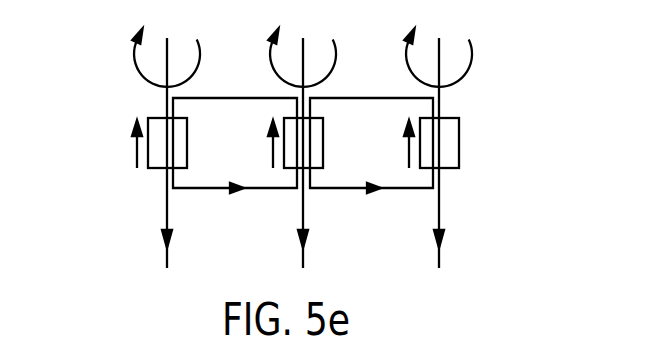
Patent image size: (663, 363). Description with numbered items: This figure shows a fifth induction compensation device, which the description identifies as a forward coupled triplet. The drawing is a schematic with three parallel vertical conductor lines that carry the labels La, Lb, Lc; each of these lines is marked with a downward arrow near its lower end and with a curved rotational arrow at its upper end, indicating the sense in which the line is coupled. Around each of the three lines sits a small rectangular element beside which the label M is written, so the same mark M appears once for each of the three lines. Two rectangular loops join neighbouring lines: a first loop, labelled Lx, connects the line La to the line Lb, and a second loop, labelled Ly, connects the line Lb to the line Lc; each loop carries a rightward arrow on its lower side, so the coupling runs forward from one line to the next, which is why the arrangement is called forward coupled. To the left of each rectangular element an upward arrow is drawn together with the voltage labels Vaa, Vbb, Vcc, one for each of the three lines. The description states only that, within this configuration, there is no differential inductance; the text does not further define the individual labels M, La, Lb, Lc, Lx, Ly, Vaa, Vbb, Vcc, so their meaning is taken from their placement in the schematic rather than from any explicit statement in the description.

The mutual inductance M is at (315, 138).
The phase a line inductance / current La is at (179, 153).
The phase b line inductance / current Lb is at (316, 153).
The phase c line inductance / current Lc is at (451, 153).
The coupling loop inductance x Lx is at (235, 161).
The coupling loop inductance y Ly is at (371, 161).
The phase a induced voltage Vaa is at (117, 145).
The phase b induced voltage Vbb is at (253, 145).
The phase c induced voltage Vcc is at (389, 145).